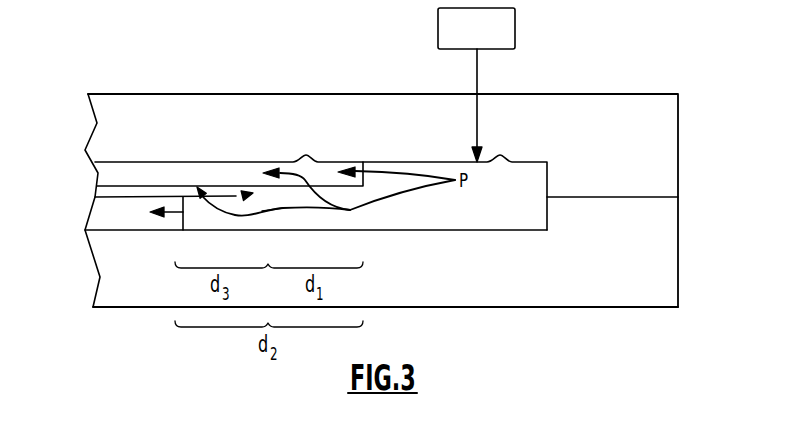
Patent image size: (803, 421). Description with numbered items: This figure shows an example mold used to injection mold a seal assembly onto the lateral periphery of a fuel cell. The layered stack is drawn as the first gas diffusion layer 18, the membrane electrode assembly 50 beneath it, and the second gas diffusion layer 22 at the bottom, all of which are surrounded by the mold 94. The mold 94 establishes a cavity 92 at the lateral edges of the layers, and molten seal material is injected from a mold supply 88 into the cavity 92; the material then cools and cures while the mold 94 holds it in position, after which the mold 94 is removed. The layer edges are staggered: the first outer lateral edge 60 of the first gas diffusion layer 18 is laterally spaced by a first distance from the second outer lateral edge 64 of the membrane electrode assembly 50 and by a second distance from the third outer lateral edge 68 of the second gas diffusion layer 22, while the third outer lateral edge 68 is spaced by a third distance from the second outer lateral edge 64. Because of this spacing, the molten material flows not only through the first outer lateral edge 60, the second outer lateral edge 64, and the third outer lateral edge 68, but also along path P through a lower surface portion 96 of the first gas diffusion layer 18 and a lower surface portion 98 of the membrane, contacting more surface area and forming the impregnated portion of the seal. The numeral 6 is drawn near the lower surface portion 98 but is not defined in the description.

The first gas diffusion layer 18 is at (107, 173).
The membrane electrode assembly 50 is at (103, 192).
The second gas diffusion layer 22 is at (100, 222).
The mold 94 is at (657, 162).
The cavity 92 is at (515, 197).
The mold supply 88 is at (492, 39).
The first outer lateral edge 60 is at (364, 174).
The lower surface portion 96 is at (364, 174).
The second outer lateral edge 64 is at (273, 225).
The branch channel 6 is at (283, 208).
The third outer lateral edge 68 is at (184, 222).
The lower surface portion 98 is at (233, 198).